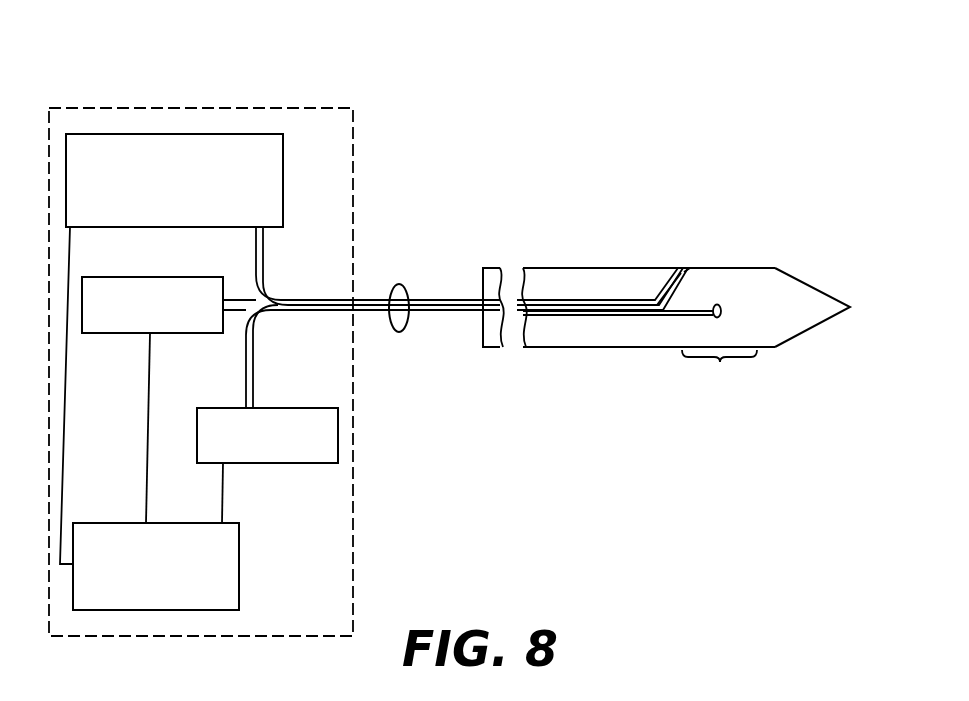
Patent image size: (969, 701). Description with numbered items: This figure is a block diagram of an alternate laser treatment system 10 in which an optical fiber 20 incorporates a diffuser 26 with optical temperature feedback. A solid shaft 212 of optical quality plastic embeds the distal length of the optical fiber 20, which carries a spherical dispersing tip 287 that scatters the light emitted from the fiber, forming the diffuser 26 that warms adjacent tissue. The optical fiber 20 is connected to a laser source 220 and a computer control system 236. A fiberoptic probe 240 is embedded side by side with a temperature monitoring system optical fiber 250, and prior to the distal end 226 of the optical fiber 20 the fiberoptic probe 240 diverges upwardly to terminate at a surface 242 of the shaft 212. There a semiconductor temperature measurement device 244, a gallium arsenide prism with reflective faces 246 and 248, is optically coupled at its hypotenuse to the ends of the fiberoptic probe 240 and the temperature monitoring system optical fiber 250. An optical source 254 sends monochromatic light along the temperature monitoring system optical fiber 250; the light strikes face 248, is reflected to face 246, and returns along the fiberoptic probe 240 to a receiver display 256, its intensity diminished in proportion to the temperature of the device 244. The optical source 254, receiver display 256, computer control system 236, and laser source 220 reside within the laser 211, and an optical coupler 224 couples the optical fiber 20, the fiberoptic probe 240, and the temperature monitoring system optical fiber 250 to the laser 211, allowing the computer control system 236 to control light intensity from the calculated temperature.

The catheter system 10 is at (560, 437).
The optical fiber 20 is at (596, 314).
The diffuser 26 is at (719, 371).
The laser 211 is at (146, 107).
The shaft 212 is at (785, 298).
The laser source 220 is at (233, 407).
The optical coupler 224 is at (398, 284).
The distal end 226 is at (712, 318).
The computer control system 236 is at (239, 575).
The fiberoptic probe 240 is at (660, 292).
The surface 242 is at (735, 269).
The semiconductor temperature measurement device 244 is at (676, 260).
The reflective face 246 is at (683, 266).
The reflective face 248 is at (687, 268).
The temperature monitoring system optical fiber 250 is at (541, 300).
The optical source 254 is at (155, 277).
The receiver display 256 is at (283, 178).
The spherical dispersing tip 287 is at (722, 313).